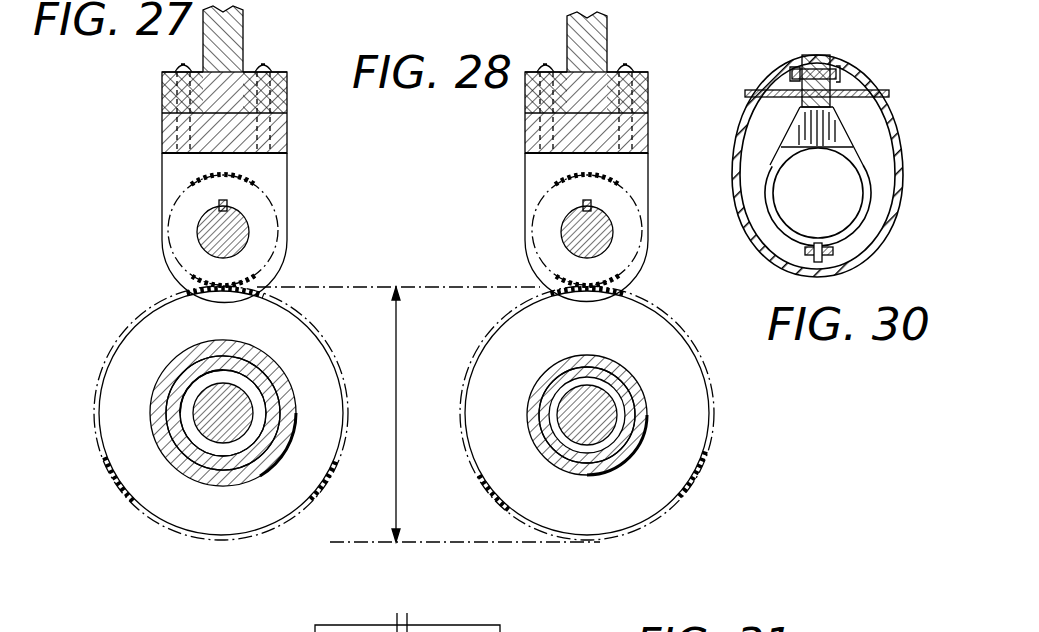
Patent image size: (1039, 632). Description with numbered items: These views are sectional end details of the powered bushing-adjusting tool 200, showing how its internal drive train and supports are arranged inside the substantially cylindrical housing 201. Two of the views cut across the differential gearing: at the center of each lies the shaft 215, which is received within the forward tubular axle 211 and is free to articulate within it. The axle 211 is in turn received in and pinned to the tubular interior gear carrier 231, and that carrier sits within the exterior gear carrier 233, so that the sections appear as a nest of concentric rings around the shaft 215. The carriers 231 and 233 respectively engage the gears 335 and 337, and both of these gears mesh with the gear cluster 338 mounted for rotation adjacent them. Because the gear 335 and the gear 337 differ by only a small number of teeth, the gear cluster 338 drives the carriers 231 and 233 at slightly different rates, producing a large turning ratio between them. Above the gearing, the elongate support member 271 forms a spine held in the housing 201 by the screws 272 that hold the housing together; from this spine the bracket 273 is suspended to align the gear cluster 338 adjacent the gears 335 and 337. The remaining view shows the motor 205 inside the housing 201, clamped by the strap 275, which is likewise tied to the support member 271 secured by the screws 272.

In FIG. 30, the power tool 200 is at (772, 273).
In FIG. 30, the housing 201 is at (742, 92).
In FIG. 30, the motor 205 is at (785, 210).
In FIG. 27, the forward tubular axle 211 is at (231, 452).
In FIG. 28, the forward tubular axle 211 is at (620, 398).
In FIG. 27, the shaft 215 is at (246, 413).
In FIG. 28, the shaft 215 is at (612, 414).
In FIG. 27, the interior gear carrier 231 is at (256, 372).
In FIG. 28, the interior gear carrier 231 is at (604, 366).
In FIG. 27, the exterior gear carrier 233 is at (240, 326).
In FIG. 27, the elongate support member 271 is at (233, 31).
In FIG. 28, the elongate support member 271 is at (598, 38).
In FIG. 30, the elongate support member 271 is at (817, 60).
In FIG. 30, the screws 272 is at (834, 74).
In FIG. 27, the bracket 273 is at (281, 128).
In FIG. 28, the bracket 273 is at (526, 134).
In FIG. 30, the strap 275 is at (848, 125).
In FIG. 28, the gear 335 is at (702, 470).
In FIG. 27, the gear 337 is at (326, 494).
In FIG. 27, the gear cluster 338 is at (240, 188).
In FIG. 28, the gear cluster 338 is at (616, 196).